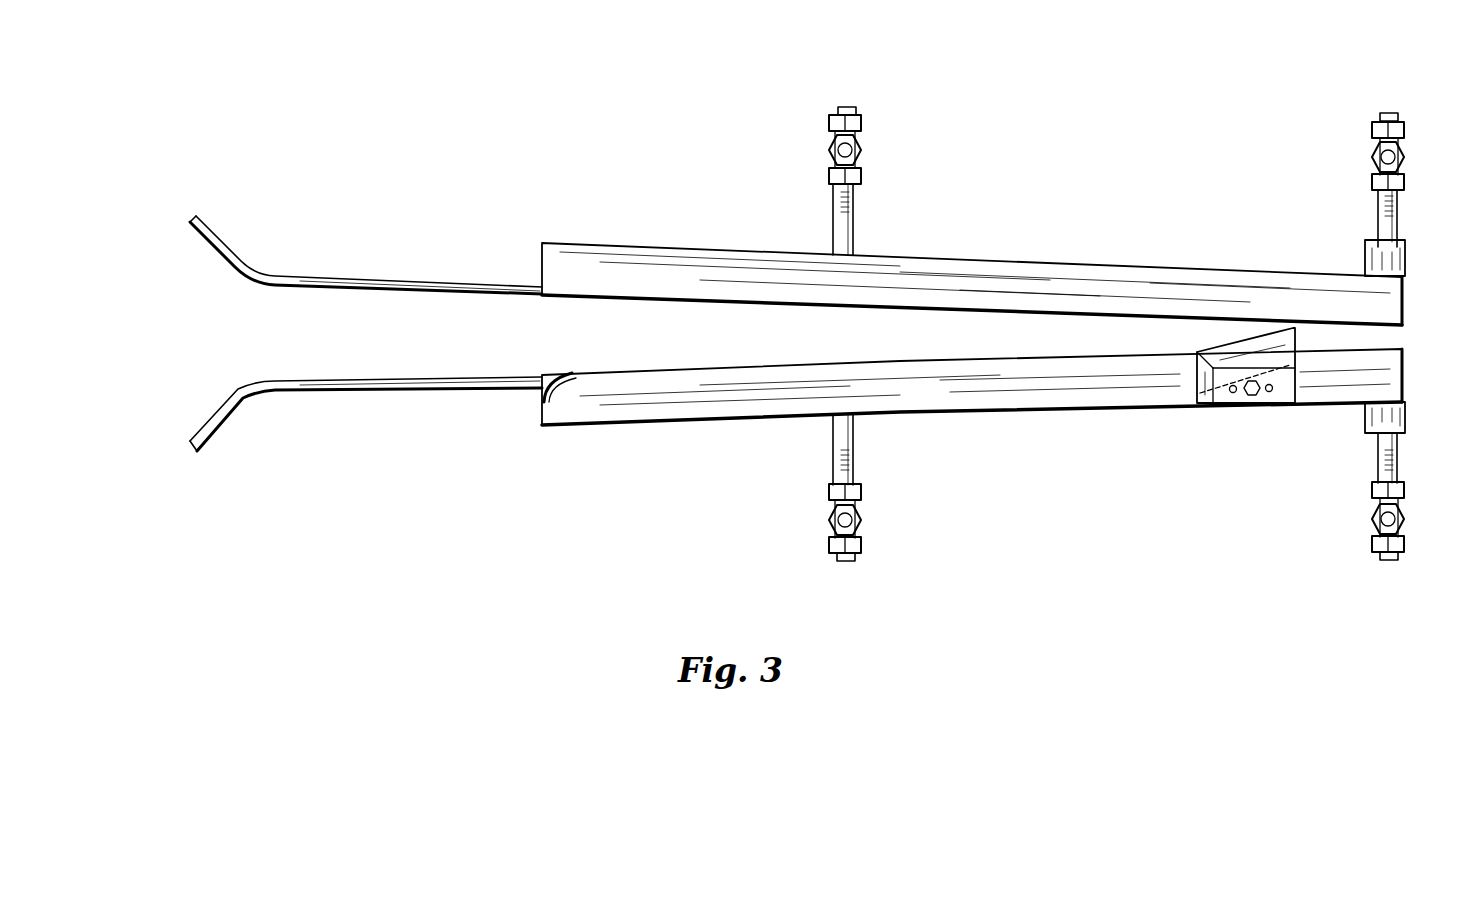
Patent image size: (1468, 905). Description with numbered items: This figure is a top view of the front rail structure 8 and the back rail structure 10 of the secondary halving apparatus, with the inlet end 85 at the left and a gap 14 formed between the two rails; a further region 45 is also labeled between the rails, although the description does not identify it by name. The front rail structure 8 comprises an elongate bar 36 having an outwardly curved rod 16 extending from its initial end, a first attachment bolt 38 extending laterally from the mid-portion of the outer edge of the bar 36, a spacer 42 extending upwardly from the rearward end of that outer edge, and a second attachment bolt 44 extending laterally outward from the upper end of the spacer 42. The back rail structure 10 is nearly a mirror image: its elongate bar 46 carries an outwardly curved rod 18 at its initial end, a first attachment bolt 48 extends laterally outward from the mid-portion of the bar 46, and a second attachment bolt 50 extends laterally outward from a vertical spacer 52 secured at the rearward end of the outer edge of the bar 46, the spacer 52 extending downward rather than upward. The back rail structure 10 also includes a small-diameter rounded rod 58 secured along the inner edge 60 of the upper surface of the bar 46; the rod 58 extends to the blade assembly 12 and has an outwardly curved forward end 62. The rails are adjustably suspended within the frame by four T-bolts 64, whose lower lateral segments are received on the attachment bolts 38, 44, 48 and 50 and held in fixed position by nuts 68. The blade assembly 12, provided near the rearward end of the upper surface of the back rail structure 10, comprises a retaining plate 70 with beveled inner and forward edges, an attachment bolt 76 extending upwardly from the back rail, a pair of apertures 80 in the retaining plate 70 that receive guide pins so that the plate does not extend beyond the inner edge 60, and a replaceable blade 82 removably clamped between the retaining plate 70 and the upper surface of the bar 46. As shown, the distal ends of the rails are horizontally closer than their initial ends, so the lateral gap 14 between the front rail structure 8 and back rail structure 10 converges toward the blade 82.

The front rail structure 8 is at (520, 233).
The back rail structure 10 is at (542, 445).
The blade assembly 12 is at (1196, 400).
The gap 14 is at (697, 337).
The outwardly curved rod 16 is at (322, 273).
The outwardly curved rod 18 is at (298, 392).
The elongate bar 36 is at (947, 277).
The first attachment bolt 38 is at (842, 222).
The spacer 42 is at (1396, 258).
The second attachment bolt 44 is at (1383, 210).
The gap region 45 is at (780, 308).
The elongate bar 46 is at (990, 397).
The first attachment bolt 48 is at (842, 458).
The second attachment bolt 50 is at (1380, 465).
The vertical spacer 52 is at (1403, 417).
The rounded rod 58 is at (610, 373).
The inner edge 60 is at (810, 357).
The outwardly curved forward end 62 is at (517, 385).
The T-bolts 64 is at (860, 146).
The nuts 68 is at (826, 173).
The retaining plate 70 is at (1247, 398).
The attachment bolt 76 is at (1244, 392).
The apertures 80 is at (1231, 393).
The replaceable blade 82 is at (1275, 342).
The inlet end 85 is at (197, 323).